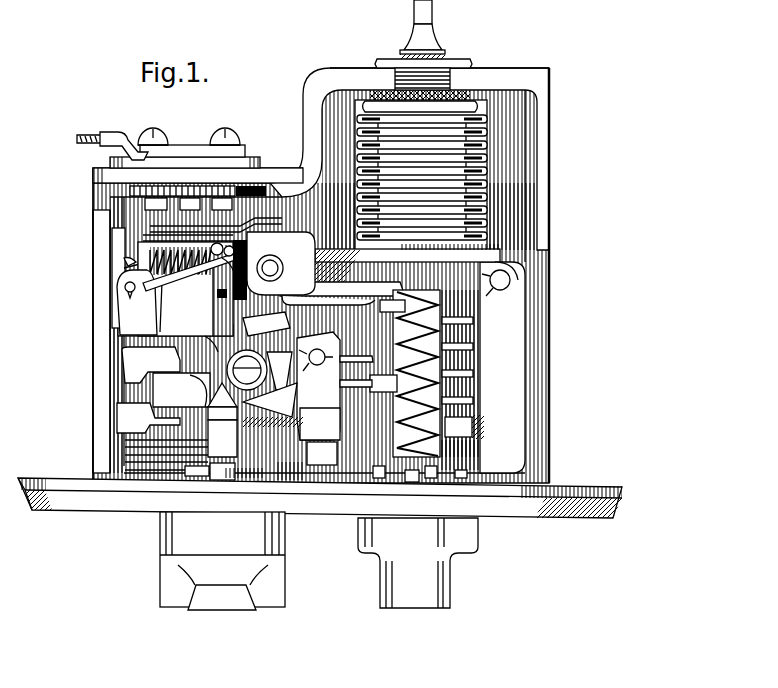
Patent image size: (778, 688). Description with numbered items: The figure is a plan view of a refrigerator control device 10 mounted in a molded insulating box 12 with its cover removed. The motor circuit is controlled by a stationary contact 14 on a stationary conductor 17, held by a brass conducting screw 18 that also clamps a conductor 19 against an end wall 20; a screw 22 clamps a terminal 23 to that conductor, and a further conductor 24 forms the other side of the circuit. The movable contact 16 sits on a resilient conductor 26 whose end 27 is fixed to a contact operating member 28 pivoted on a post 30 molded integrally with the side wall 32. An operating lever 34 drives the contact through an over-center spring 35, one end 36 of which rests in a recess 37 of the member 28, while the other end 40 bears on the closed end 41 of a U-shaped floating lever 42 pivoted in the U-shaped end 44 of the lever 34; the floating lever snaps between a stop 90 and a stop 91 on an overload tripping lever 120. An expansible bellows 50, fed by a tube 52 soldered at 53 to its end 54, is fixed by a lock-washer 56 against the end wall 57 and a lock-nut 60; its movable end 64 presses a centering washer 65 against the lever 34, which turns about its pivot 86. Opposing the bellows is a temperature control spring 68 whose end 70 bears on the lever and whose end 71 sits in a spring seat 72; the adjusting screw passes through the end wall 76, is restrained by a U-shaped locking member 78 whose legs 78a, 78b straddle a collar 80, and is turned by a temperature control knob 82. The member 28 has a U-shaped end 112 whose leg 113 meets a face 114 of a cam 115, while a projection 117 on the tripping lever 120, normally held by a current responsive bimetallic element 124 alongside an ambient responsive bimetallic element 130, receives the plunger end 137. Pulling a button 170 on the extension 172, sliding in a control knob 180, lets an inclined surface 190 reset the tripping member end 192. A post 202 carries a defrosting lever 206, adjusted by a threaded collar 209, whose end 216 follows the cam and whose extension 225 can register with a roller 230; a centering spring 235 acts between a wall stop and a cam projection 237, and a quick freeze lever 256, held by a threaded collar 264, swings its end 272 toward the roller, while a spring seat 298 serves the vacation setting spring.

The refrigerator control device 10 is at (54, 336).
The molded box 12 is at (96, 396).
The contact 14 is at (148, 190).
The movable contact 16 is at (174, 190).
The stationary conductor 17 is at (201, 190).
The brass conducting screw 18 is at (232, 135).
The conductor 19 is at (185, 146).
The end wall 20 is at (106, 171).
The screw 22 is at (163, 131).
The terminal 23 is at (104, 132).
The conductor 24 is at (116, 242).
The resilient conductor 26 is at (255, 207).
The end 27 is at (283, 235).
The contact operating member 28 is at (269, 261).
The post 30 is at (278, 262).
The side wall 32 is at (112, 378).
The operating lever 34 is at (365, 283).
The over-center spring 35 is at (162, 248).
The end 36 is at (128, 262).
The recess 37 is at (128, 268).
The end 40 is at (217, 243).
The closed end 41 is at (224, 262).
The U-shaped floating lever 42 is at (190, 270).
The U-shaped end 44 is at (137, 302).
The expansible bellows 50 is at (482, 162).
The tube 52 is at (432, 14).
The solder joint 53 is at (441, 50).
The end of bellows 54 is at (446, 55).
The lock-washer 56 is at (460, 92).
The end wall 57 is at (348, 70).
The lock-nut 60 is at (466, 64).
The movable end 64 is at (432, 249).
The centering washer 65 is at (464, 252).
The temperature control spring 68 is at (474, 357).
The end 70 is at (370, 289).
The end 71 is at (458, 427).
The spring seat 72 is at (480, 423).
The end wall 76 is at (320, 505).
The U-shaped locking member 78 is at (430, 480).
The leg 78a is at (386, 480).
The leg 78b is at (458, 480).
The collar 80 is at (410, 480).
The temperature control knob 82 is at (450, 586).
The pivot 86 is at (502, 290).
The stop 90 is at (231, 246).
The stop 91 is at (217, 288).
The U-shaped end 112 is at (279, 371).
The leg 113 is at (248, 396).
The face 114 is at (222, 395).
The cam 115 is at (222, 408).
The projection 117 is at (206, 333).
The overload tripping lever 120 is at (185, 289).
The current responsive bimetallic thermal element 124 is at (151, 365).
The ambient temperature responsive bimetallic element 130 is at (222, 438).
The end of plunger 137 is at (214, 186).
The button 170 is at (222, 597).
The extension 172 is at (222, 471).
The control knob 180 is at (160, 574).
The inclined surface 190 is at (185, 390).
The end 192 is at (148, 418).
The post 202 is at (315, 385).
The defrosting lever 206 is at (322, 453).
The threaded collar 209 is at (352, 377).
The end 216 is at (290, 480).
The extension 225 is at (298, 400).
The roller 230 is at (247, 363).
The centering spring 235 is at (192, 482).
The projection 237 is at (212, 483).
The quick freeze lever 256 is at (320, 424).
The threaded collar 264 is at (387, 346).
The end 272 is at (266, 324).
The spring seat 298 is at (455, 454).